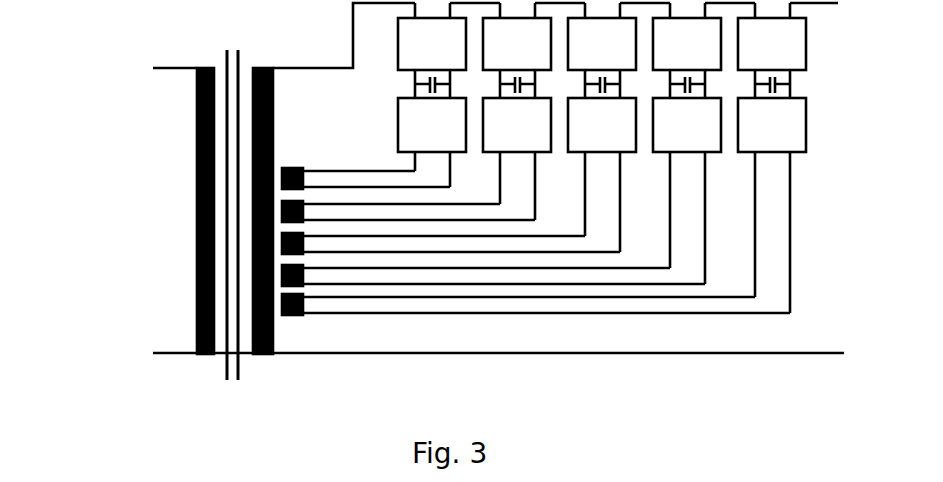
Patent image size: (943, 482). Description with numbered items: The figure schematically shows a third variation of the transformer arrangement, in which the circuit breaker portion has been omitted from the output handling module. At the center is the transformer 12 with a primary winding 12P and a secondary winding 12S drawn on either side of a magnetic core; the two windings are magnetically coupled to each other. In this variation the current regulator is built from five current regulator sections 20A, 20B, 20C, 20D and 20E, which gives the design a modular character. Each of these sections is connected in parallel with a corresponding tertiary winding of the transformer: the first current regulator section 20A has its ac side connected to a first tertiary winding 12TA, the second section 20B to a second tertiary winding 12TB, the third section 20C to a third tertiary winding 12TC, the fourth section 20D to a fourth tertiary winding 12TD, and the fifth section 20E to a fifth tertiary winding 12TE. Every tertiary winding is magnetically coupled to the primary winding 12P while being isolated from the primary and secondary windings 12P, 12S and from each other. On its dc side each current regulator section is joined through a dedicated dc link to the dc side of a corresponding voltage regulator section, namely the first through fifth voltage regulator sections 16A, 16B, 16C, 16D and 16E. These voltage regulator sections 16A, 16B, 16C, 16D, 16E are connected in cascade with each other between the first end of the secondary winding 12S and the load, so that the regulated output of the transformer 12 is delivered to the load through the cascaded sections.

The transformer 12 is at (237, 28).
The primary winding 12P is at (197, 145).
The secondary winding 12S is at (273, 104).
The first tertiary winding 12TA is at (303, 180).
The second tertiary winding 12TB is at (303, 213).
The third tertiary winding 12TC is at (303, 247).
The fourth tertiary winding 12TD is at (303, 281).
The fifth tertiary winding 12TE is at (298, 315).
The first voltage regulator section 16A is at (449, 50).
The second voltage regulator section 16B is at (534, 50).
The third voltage regulator section 16C is at (619, 50).
The fourth voltage regulator section 16D is at (704, 50).
The fifth voltage regulator section 16E is at (788, 50).
The first current regulator section 20A is at (432, 142).
The second current regulator section 20B is at (517, 159).
The third current regulator section 20C is at (602, 175).
The fourth current regulator section 20D is at (687, 191).
The fifth current regulator section 20E is at (772, 205).